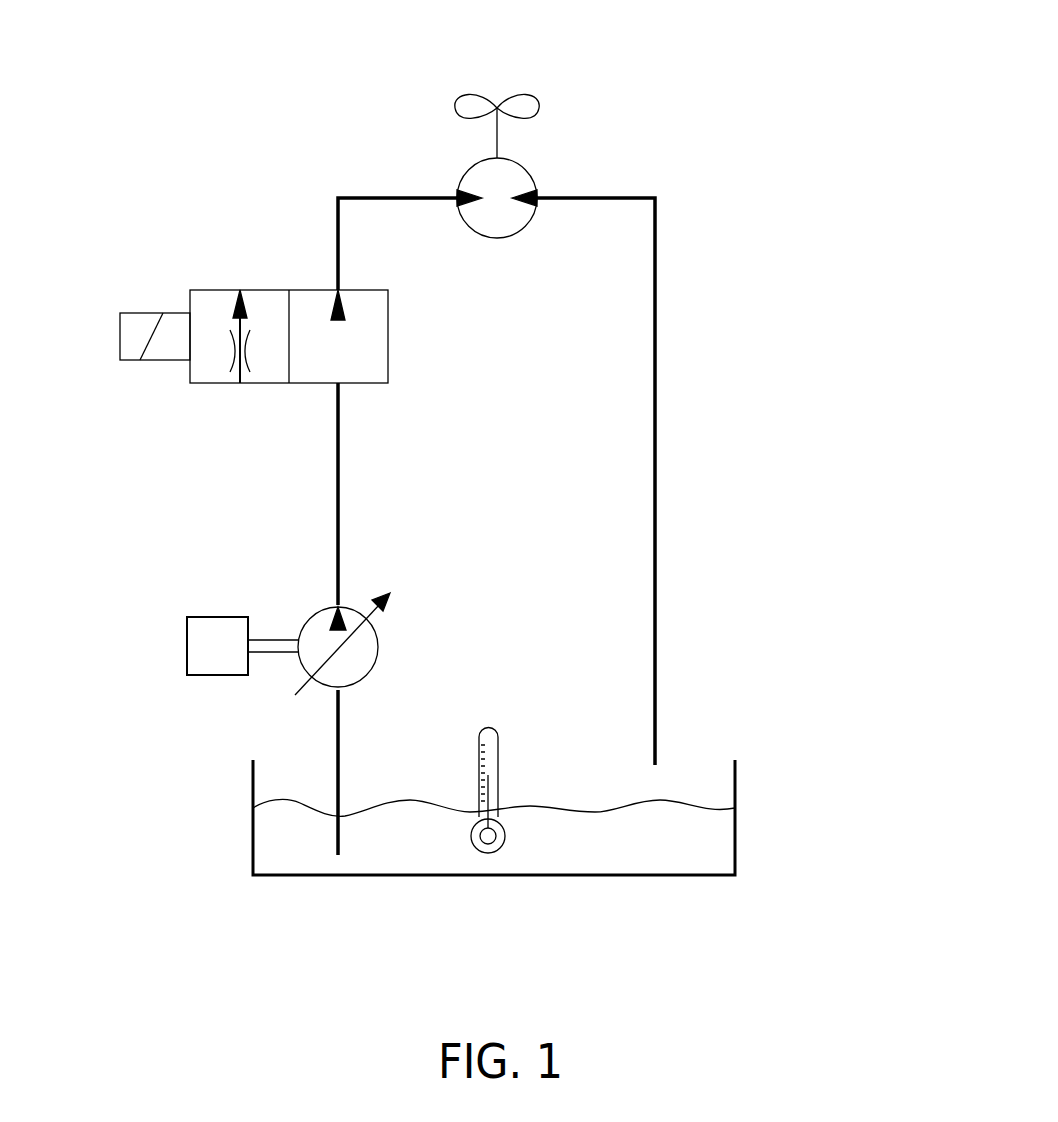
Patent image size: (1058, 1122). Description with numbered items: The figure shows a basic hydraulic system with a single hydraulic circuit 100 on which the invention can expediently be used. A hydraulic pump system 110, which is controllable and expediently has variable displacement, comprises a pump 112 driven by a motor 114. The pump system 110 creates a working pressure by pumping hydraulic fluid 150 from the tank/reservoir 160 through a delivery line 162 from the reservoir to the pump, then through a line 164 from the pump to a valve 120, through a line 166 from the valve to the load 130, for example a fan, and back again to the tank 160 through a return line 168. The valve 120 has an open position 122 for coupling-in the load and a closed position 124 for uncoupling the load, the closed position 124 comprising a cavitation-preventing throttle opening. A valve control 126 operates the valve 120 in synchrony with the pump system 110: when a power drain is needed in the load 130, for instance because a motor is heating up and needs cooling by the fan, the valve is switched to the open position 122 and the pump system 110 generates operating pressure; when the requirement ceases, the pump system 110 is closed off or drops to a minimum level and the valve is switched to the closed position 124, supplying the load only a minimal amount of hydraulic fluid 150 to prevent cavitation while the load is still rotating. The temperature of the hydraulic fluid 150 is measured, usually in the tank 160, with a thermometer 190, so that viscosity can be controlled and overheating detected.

The hydraulic circuit 100 is at (595, 62).
The hydraulic pump system 110 is at (236, 626).
The pump 112 is at (307, 618).
The motor for pump 114 is at (185, 653).
The valve 120 is at (220, 332).
The open position 122 is at (312, 385).
The closed position 124 is at (222, 385).
The valve control 126 is at (138, 312).
The load 130 is at (525, 170).
The hydraulic fluid 150 is at (706, 853).
The tank/reservoir 160 is at (738, 780).
The hydraulic fluid delivery from reservoir to pump 162 is at (335, 752).
The hydraulic fluid delivery from pump to valve 164 is at (335, 572).
The hydraulic fluid delivery from valve to load 166 is at (383, 197).
The hydraulic fluid delivery from pump to reservoir 168 is at (655, 540).
The thermometer 190 is at (499, 774).